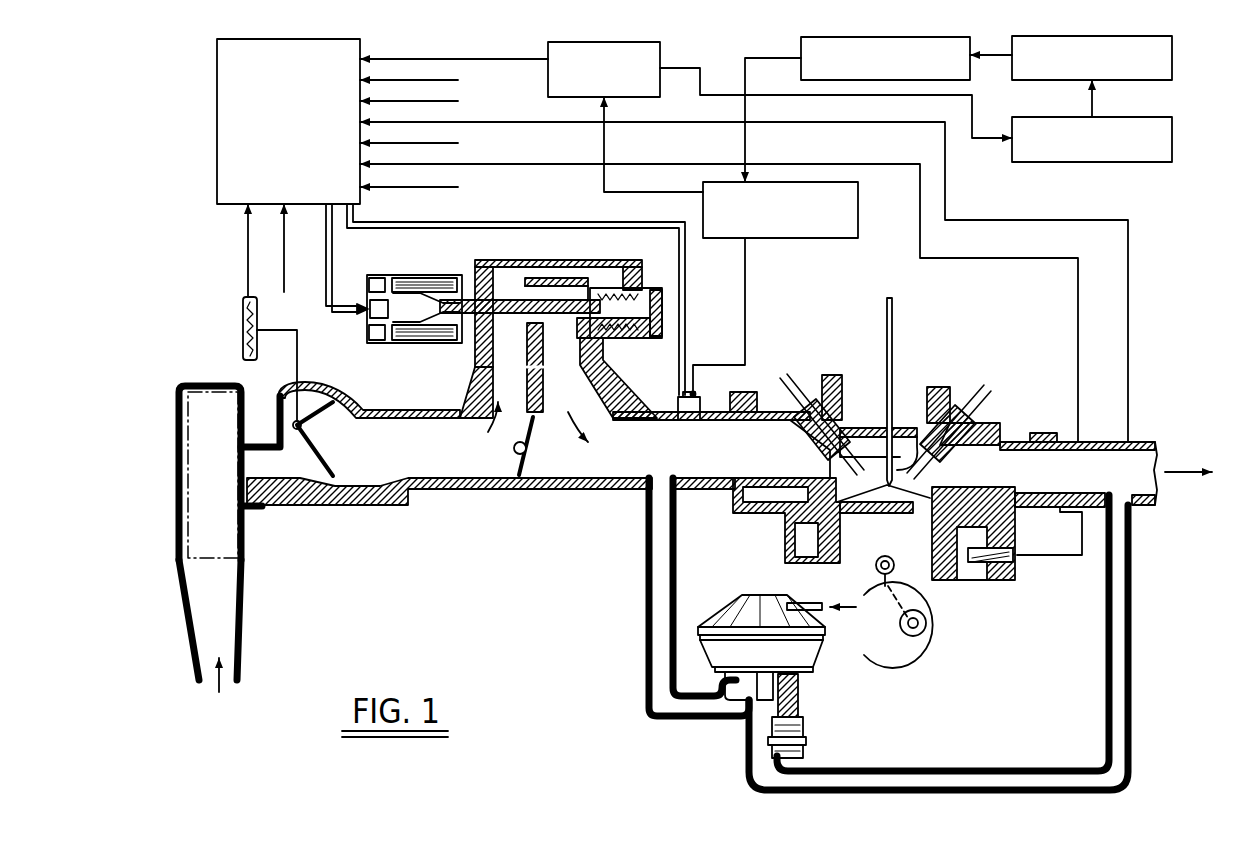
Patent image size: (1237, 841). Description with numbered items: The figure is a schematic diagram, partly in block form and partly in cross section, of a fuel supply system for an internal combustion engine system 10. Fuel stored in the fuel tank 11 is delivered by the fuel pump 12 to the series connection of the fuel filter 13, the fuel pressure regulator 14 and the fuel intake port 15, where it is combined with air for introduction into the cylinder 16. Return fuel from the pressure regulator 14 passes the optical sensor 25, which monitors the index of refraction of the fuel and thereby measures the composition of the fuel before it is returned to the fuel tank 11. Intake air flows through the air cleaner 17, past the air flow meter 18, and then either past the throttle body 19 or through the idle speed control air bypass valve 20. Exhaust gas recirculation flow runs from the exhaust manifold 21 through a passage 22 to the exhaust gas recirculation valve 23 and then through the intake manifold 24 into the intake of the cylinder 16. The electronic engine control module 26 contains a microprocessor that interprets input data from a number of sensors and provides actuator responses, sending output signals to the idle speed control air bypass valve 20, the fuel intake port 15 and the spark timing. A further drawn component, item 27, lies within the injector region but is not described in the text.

The internal combustion engine system 10 is at (1168, 224).
The fuel tank 11 is at (1060, 162).
The fuel pump 12 is at (1030, 80).
The fuel filter 13 is at (801, 67).
The fuel pressure regulator 14 is at (858, 210).
The fuel intake port 15 is at (708, 400).
The cylinder 16 is at (884, 492).
The air cleaner 17 is at (243, 540).
The air flow meter 18 is at (325, 458).
The throttle body 19 is at (528, 430).
The idle speed control air bypass valve 20 is at (551, 270).
The exhaust manifold 21 is at (1130, 460).
The passage 22 is at (953, 768).
The exhaust gas recirculation valve 23 is at (800, 698).
The intake manifold 24 is at (683, 492).
The optical sensor 25 is at (548, 82).
The electronic engine control module 26 is at (217, 150).
The injector nozzle needle 27 is at (855, 438).